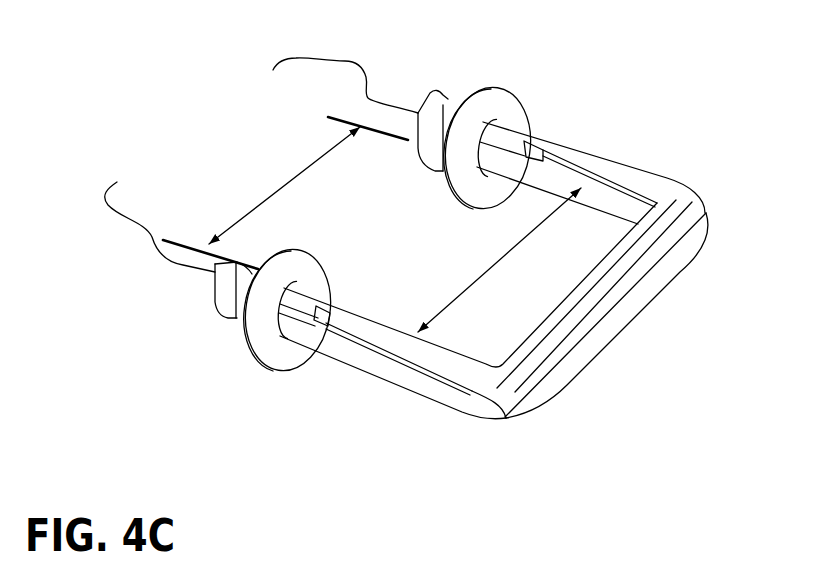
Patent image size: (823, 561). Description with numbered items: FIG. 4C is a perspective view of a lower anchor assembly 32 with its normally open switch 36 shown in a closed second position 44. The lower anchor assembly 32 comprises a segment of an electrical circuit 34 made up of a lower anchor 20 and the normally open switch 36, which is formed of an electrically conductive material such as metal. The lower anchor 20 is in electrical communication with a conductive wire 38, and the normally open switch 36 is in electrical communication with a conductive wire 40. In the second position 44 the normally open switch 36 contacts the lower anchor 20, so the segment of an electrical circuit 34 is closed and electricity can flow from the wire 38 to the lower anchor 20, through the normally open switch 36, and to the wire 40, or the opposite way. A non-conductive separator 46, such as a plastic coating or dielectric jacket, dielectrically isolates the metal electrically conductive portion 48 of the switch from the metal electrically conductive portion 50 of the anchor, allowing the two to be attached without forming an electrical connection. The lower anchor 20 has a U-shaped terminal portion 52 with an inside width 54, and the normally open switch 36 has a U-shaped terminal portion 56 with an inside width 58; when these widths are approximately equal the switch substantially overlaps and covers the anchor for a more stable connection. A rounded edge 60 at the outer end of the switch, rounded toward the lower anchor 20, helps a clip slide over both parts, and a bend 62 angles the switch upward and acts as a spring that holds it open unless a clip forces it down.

The lower anchor 20 is at (534, 285).
The lower anchor assembly 32 is at (469, 121).
The segment of an electrical circuit 34 is at (222, 216).
The normally open switch 36 is at (598, 145).
The conductive wire 38 is at (152, 240).
The conductive wire 40 is at (367, 84).
The second position 44 is at (644, 312).
The non-conductive separator 46 is at (514, 138).
The metal electrically conductive portion 48 is at (632, 180).
The metal electrically conductive portion 50 is at (467, 339).
The U-shaped terminal portion 52 is at (565, 373).
The inside width 54 is at (264, 200).
The U-shaped terminal portion 56 is at (622, 276).
The inside width 58 is at (497, 262).
The rounded edge 60 is at (575, 332).
The bend 62 is at (330, 335).